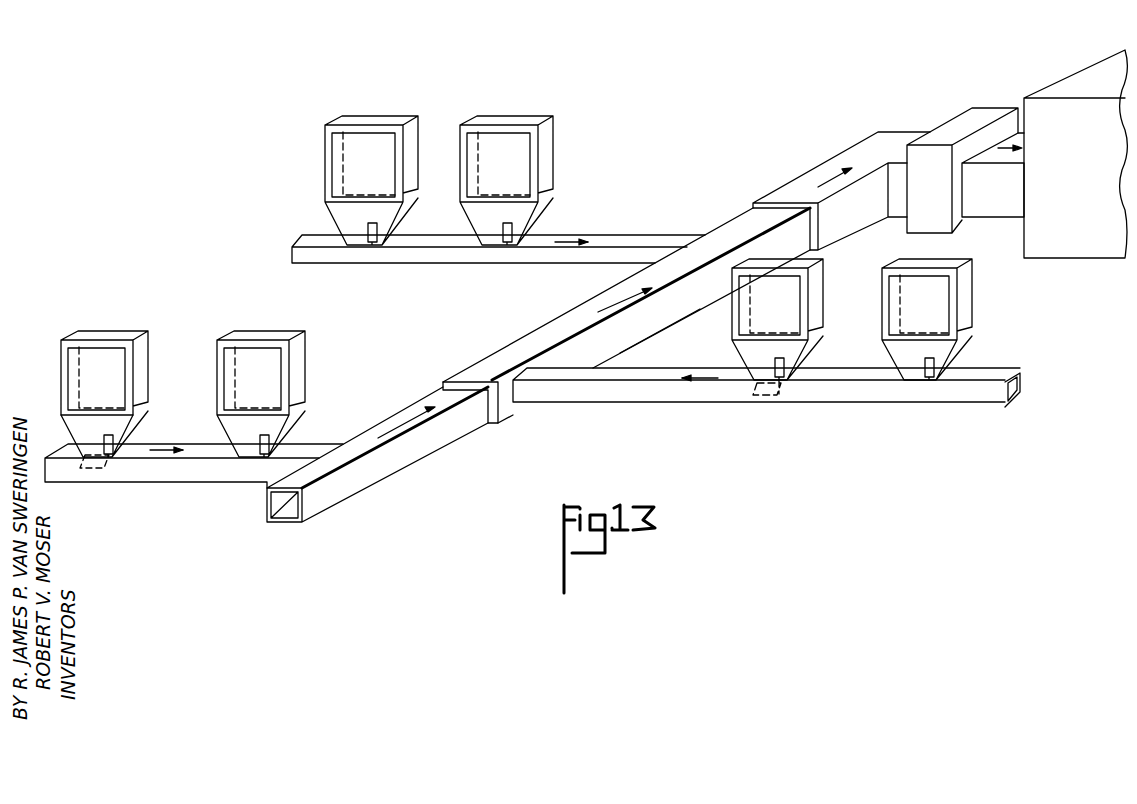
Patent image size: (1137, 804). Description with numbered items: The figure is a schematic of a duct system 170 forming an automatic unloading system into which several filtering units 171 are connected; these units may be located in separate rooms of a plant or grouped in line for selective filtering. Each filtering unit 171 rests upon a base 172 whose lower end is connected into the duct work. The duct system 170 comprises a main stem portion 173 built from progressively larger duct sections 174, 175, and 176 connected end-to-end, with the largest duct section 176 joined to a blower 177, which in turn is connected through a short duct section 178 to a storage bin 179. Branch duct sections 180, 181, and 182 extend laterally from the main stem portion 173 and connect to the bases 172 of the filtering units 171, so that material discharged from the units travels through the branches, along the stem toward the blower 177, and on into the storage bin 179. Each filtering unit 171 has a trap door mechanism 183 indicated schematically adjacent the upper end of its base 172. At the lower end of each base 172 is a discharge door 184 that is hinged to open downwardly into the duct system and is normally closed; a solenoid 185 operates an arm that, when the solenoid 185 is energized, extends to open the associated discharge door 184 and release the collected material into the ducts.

The duct system 170 is at (700, 163).
The filtering unit 171 is at (142, 352).
The base 172 is at (118, 446).
The main stem portion 173 is at (575, 307).
The duct section 174 is at (383, 468).
The duct section 175 is at (660, 325).
The duct section 176 is at (832, 165).
The blower 177 is at (976, 112).
The short duct section 178 is at (996, 205).
The storage bin 179 is at (1058, 252).
The branch duct section 180 is at (168, 472).
The branch duct section 181 is at (713, 400).
The branch duct section 182 is at (423, 263).
The trap door mechanism 183 is at (84, 400).
The discharge door 184 is at (107, 457).
The solenoid 185 is at (112, 454).